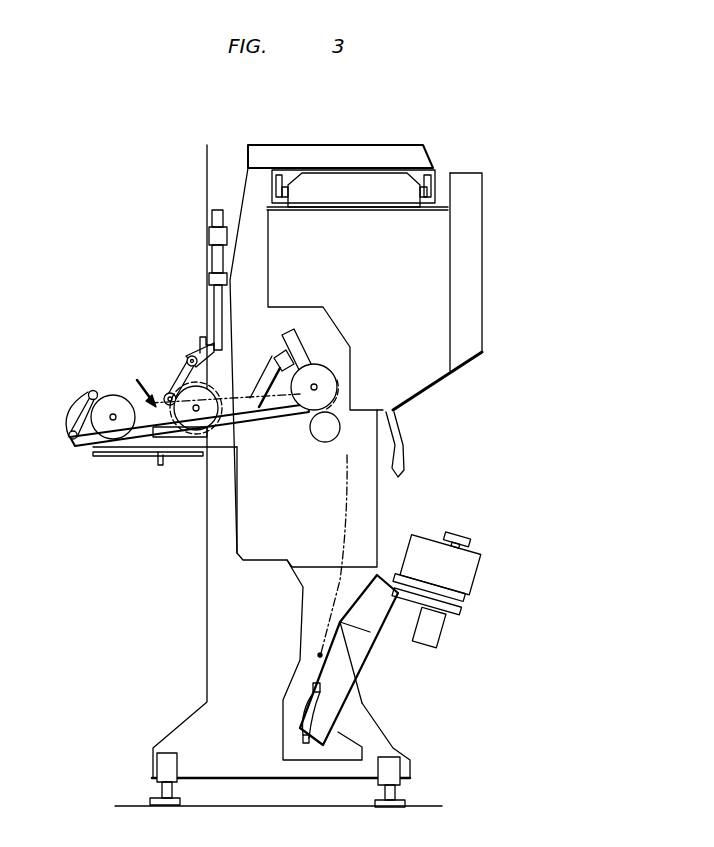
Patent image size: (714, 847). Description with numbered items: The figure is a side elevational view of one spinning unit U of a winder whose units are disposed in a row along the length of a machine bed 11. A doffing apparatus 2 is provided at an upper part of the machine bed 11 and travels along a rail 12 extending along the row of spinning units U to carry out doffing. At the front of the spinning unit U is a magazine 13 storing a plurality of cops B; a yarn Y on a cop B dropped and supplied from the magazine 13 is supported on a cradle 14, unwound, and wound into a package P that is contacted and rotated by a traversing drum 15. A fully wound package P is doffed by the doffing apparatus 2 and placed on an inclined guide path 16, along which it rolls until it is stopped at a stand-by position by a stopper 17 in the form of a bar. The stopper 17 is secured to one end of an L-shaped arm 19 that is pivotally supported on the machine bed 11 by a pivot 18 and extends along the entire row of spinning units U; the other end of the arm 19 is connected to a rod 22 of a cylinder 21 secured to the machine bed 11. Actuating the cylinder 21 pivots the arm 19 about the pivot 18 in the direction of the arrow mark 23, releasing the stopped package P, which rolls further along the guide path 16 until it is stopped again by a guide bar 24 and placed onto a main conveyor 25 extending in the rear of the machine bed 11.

The doffing apparatus 2 is at (433, 287).
The machine bed 11 is at (222, 623).
The rail 12 is at (432, 170).
The magazine 13 is at (457, 567).
The cradle 14 is at (298, 353).
The traversing drum 15 is at (318, 432).
The inclined guide path 16 is at (275, 416).
The stopper 17 is at (178, 392).
The pivot 18 is at (190, 350).
The L-shaped arm 19 is at (170, 392).
The cylinder 21 is at (215, 252).
The rod 22 is at (213, 303).
The arrow mark 23 is at (120, 393).
The guide bar 24 is at (90, 393).
The main conveyor 25 is at (93, 452).
The package P is at (102, 362).
The spinning unit U is at (370, 505).
The yarn Y is at (347, 522).
The cop B is at (307, 697).